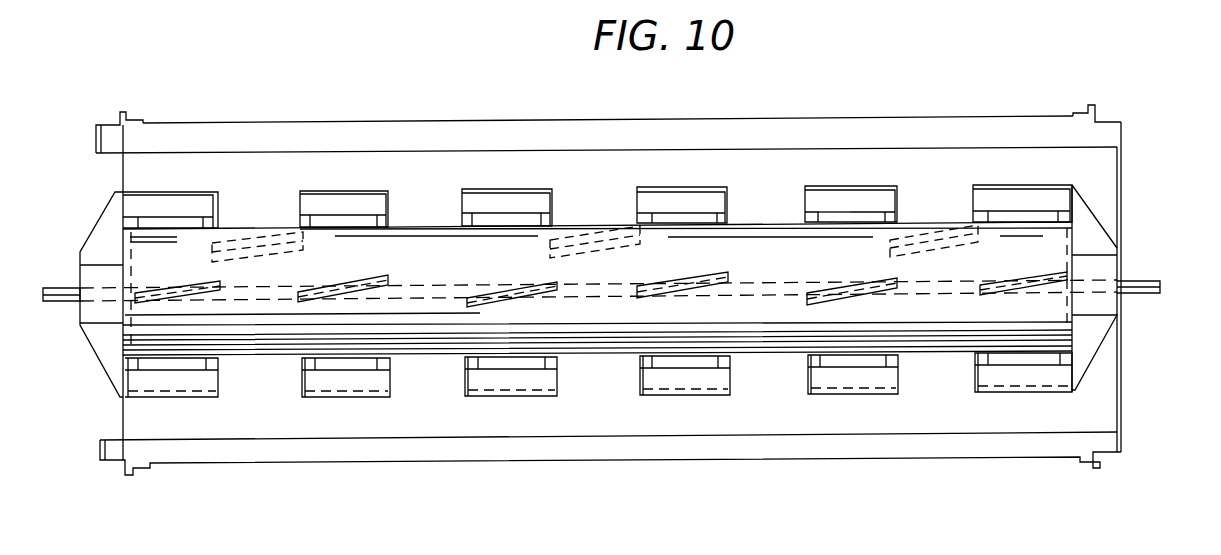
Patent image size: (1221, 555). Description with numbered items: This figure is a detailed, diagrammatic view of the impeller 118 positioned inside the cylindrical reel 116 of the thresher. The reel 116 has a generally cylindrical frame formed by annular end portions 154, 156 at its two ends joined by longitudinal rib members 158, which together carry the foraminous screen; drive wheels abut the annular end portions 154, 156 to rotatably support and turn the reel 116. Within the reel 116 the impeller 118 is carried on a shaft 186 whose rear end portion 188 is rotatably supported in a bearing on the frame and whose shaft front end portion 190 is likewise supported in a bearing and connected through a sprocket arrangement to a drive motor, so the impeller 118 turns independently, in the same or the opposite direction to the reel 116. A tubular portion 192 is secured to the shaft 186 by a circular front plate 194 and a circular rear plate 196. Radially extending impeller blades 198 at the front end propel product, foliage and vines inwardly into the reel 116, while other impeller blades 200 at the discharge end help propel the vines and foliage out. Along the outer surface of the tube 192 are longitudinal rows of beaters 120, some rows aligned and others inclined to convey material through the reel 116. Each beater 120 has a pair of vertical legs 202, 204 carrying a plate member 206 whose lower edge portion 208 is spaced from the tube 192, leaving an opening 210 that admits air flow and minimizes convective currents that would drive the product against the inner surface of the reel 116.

The cylindrical reel 116 is at (744, 114).
The impeller 118 is at (422, 196).
The beaters 120 is at (860, 187).
The annular end portion 154 is at (1103, 122).
The annular end portion 156 is at (110, 125).
The longitudinal rib members 158 is at (322, 123).
The shaft 186 is at (418, 285).
The rear end portion 188 is at (62, 287).
The shaft front end portion 190 is at (1140, 281).
The tubular portion 192 is at (602, 225).
The circular front plate 194 is at (1068, 299).
The circular rear plate 196 is at (133, 277).
The impeller blades 198 is at (1097, 222).
The impeller blades 200 is at (112, 222).
The vertical leg 202 is at (810, 218).
The vertical leg 204 is at (890, 218).
The plate member 206 is at (846, 171).
The lower edge portion 208 is at (831, 216).
The opening 210 is at (860, 218).